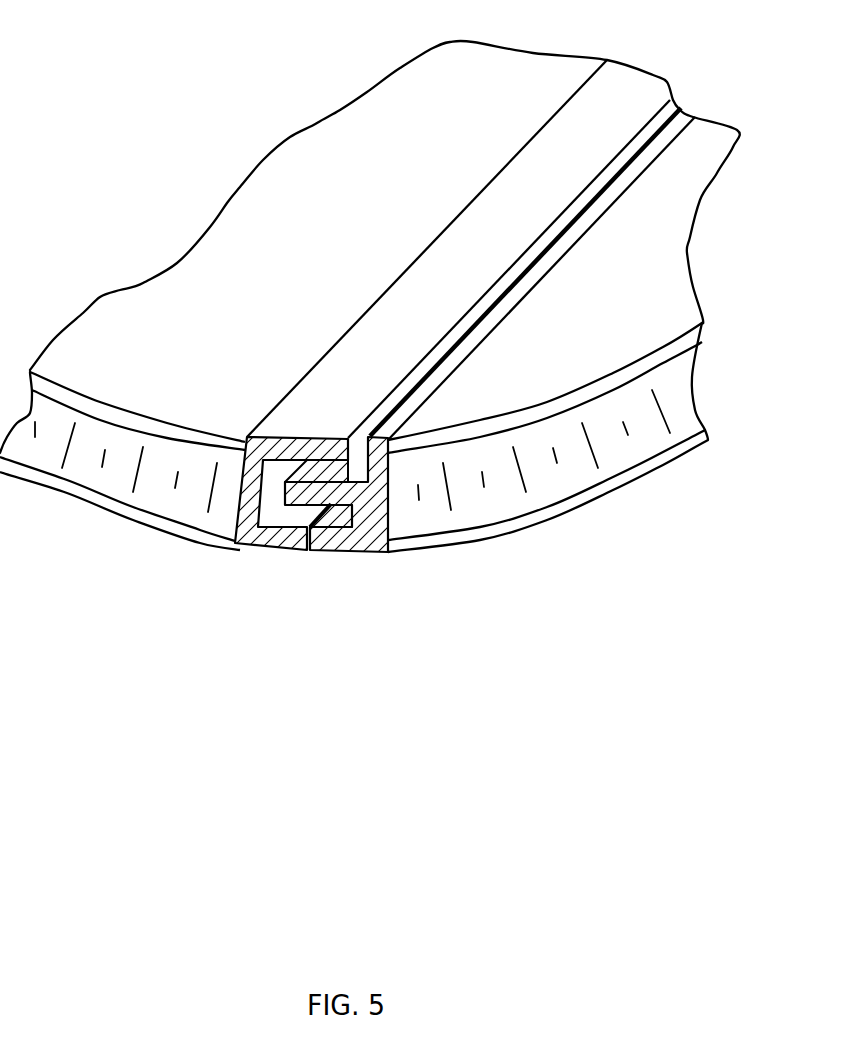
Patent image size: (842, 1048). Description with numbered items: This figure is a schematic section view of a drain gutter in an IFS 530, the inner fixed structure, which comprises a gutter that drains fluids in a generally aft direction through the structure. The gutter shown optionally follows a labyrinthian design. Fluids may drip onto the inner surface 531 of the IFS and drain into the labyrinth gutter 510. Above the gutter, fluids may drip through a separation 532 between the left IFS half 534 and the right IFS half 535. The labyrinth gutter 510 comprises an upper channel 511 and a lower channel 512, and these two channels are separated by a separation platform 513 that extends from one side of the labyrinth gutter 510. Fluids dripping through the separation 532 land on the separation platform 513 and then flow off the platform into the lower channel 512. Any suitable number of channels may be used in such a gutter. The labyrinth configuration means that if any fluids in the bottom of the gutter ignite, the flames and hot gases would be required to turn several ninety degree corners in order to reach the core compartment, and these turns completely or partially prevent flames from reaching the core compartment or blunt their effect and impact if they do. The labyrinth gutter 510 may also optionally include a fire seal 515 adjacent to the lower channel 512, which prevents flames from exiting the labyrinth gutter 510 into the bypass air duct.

The IFS 530 is at (290, 137).
The inner surface 531 is at (268, 258).
The labyrinth gutter 510 is at (478, 303).
The separation 532 is at (367, 432).
The right IFS half 535 is at (130, 528).
The left IFS half 534 is at (507, 535).
The lower channel 512 is at (300, 515).
The upper channel 511 is at (331, 475).
The separation platform 513 is at (315, 512).
The fire seal 515 is at (310, 553).